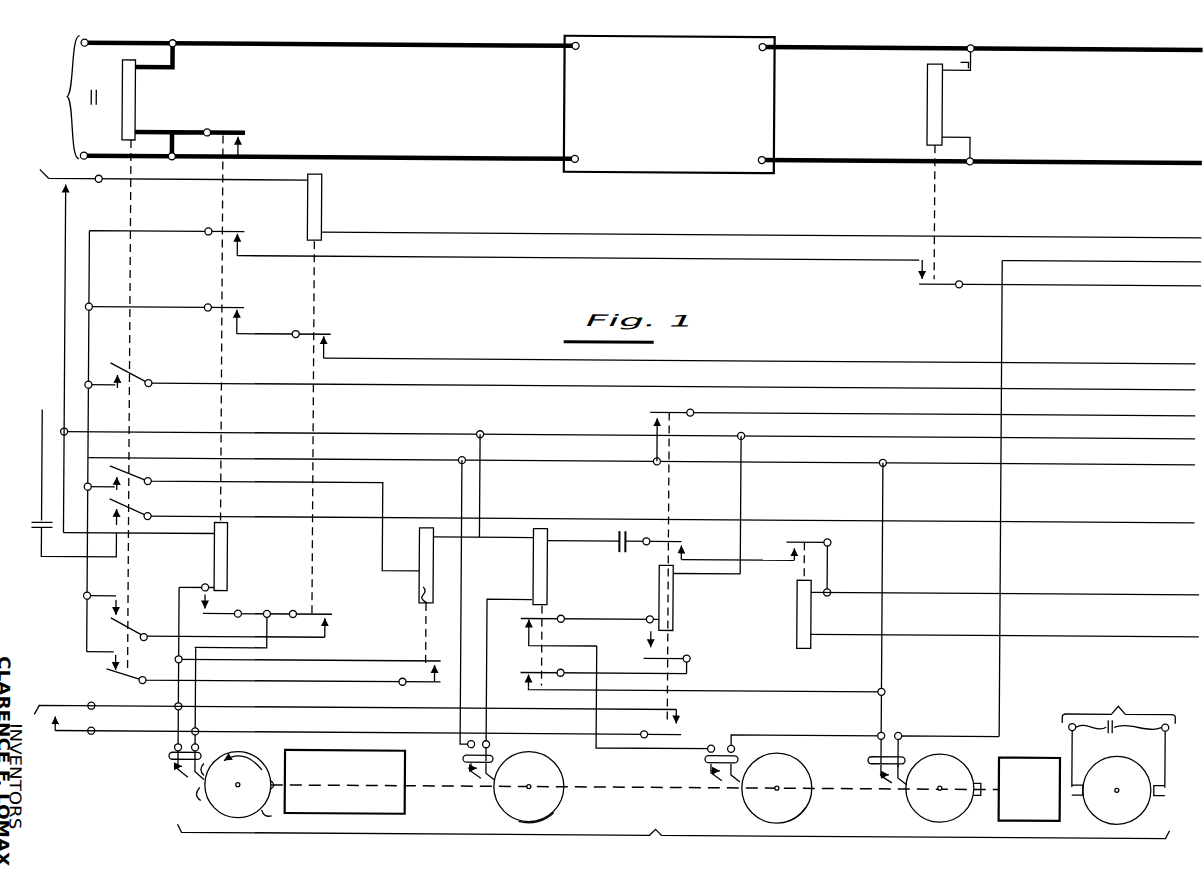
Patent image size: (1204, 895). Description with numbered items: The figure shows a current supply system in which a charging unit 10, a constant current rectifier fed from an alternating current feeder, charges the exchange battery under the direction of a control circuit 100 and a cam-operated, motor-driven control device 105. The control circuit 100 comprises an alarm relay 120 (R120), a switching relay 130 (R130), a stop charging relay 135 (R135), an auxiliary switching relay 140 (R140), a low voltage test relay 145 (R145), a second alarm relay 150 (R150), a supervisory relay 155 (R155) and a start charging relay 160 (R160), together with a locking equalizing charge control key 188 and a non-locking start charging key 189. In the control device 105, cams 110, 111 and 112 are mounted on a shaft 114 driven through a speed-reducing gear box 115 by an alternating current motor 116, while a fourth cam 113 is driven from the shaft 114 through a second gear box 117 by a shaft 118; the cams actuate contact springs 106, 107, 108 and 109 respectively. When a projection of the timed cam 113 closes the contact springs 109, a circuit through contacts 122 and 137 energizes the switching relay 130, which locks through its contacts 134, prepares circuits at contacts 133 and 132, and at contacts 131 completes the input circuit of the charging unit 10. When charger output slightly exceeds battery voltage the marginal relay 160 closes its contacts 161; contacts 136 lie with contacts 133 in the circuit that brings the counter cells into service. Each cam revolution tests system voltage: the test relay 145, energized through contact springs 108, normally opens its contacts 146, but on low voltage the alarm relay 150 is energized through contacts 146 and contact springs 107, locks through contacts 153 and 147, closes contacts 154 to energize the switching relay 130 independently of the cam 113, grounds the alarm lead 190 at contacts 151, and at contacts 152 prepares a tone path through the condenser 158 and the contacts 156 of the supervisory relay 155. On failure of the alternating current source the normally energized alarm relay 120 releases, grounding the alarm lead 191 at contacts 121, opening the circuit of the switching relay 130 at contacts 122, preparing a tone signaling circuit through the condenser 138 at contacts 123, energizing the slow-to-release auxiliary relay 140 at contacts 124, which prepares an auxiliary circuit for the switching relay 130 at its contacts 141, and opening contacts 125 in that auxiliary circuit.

The charging unit 10 is at (772, 103).
The control circuit 100 is at (601, 402).
The control device 105 is at (673, 826).
The contact springs 106 is at (870, 760).
The contact springs 107 is at (705, 760).
The contact springs 108 is at (465, 759).
The contact springs 109 is at (170, 758).
The cam 110 is at (928, 807).
The cam 111 is at (762, 808).
The cam 112 is at (556, 808).
The fourth cam 113 is at (216, 799).
The shaft 114 is at (983, 788).
The speed-reducing gear box 115 is at (1000, 757).
The alternating current motor 116 is at (1106, 812).
The speed-reducing gear box 117 is at (372, 816).
The shaft 118 is at (276, 792).
The contacts 121 is at (121, 392).
The contacts 122 is at (124, 612).
The contacts 123 is at (128, 522).
The contacts 124 is at (124, 488).
The contacts 125 is at (122, 658).
The contacts 131 is at (244, 137).
The contacts 132 is at (244, 240).
The contacts 133 is at (244, 316).
The contacts 134 is at (220, 609).
The contacts 136 is at (331, 338).
The contacts 137 is at (333, 618).
The condenser 138 is at (36, 540).
The contacts 141 is at (428, 678).
The contacts 146 is at (543, 626).
The contacts 147 is at (515, 682).
The contacts 151 is at (648, 424).
The contacts 152 is at (685, 556).
The contacts 153 is at (662, 660).
The contacts 154 is at (680, 729).
The contacts 156 is at (789, 556).
The condenser 158 is at (650, 506).
The contacts 161 is at (930, 266).
The equalizing charge control key 188 is at (70, 192).
The start charging key 189 is at (47, 738).
The alarm lead 190 is at (1136, 412).
The alarm lead 191 is at (1136, 386).
The alarm relay 120 is at (133, 80).
The switching relay 130 is at (246, 563).
The stop charging relay 135 is at (336, 216).
The auxiliary switching relay 140 is at (419, 584).
The low voltage test relay 145 is at (557, 584).
The alarm relay 150 is at (684, 592).
The supervisory relay 155 is at (797, 615).
The start charging relay 160 is at (890, 181).
The alarm relay R120 is at (182, 355).
The switching relay R130 is at (247, 363).
The stop charging relay R135 is at (360, 391).
The auxiliary switching relay R140 is at (397, 596).
The low voltage test relay R145 is at (575, 605).
The alarm relay R150 is at (663, 567).
The supervisory relay R155 is at (941, 596).
The start charging relay R160 is at (1003, 162).